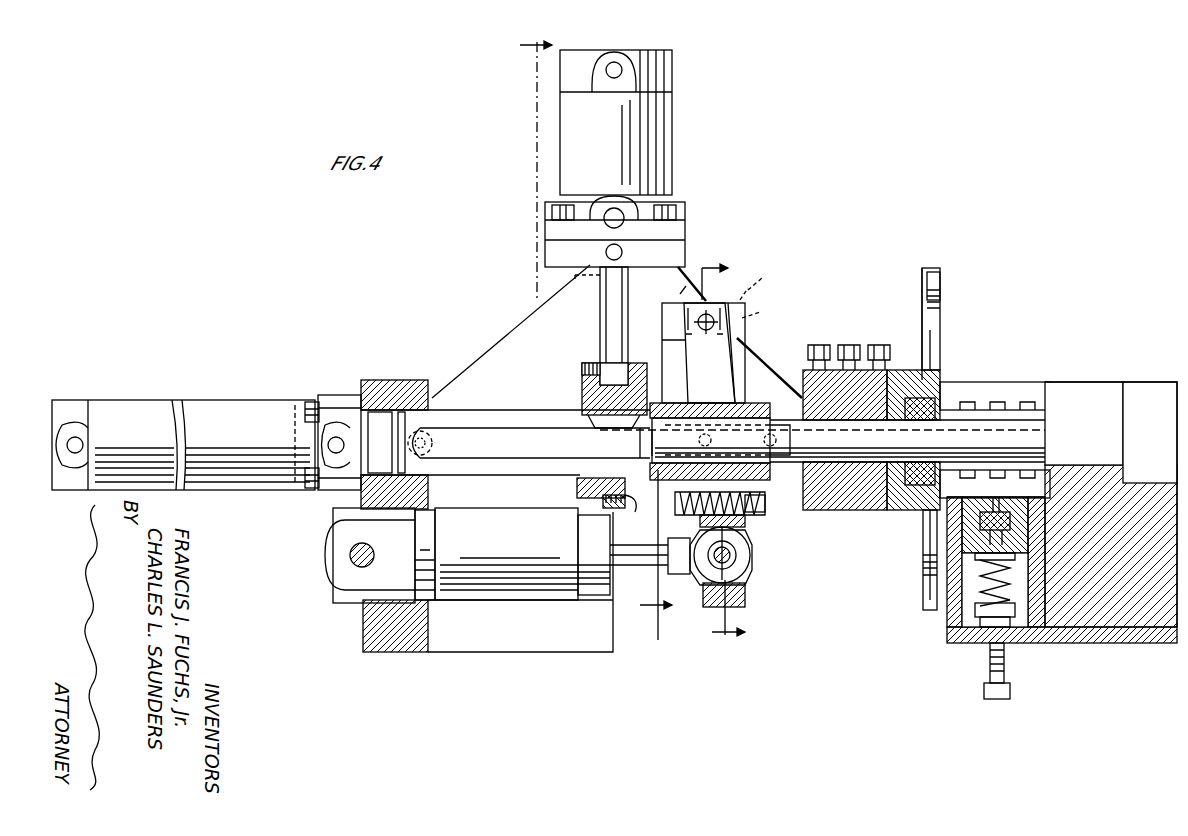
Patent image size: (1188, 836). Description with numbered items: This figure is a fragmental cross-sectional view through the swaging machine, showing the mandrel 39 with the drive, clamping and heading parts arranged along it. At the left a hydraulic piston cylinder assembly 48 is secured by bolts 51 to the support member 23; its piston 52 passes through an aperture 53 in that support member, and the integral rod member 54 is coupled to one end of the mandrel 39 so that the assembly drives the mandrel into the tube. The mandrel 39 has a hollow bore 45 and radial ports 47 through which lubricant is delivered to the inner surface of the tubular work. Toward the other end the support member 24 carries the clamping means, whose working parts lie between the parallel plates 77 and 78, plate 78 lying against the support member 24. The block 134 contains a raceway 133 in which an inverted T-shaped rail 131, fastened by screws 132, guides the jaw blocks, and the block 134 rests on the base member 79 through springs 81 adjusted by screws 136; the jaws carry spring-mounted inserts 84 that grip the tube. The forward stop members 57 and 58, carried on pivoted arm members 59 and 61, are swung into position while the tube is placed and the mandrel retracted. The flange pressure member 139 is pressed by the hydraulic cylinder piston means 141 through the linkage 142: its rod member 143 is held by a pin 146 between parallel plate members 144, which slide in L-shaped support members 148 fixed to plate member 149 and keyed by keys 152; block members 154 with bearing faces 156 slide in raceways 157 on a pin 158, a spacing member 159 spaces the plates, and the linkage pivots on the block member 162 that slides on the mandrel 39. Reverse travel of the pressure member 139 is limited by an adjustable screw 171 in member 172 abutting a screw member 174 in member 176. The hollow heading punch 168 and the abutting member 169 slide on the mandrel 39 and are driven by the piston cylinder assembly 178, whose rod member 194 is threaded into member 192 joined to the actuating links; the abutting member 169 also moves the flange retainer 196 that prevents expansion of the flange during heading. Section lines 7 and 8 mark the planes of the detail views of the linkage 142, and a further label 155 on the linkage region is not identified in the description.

The section line 7- 7 is at (596, 327).
The section line 8- 8 is at (723, 451).
The support member 23 is at (368, 380).
The support member 24 is at (1130, 600).
The mandrel 39 is at (1046, 425).
The hollow bore 45 is at (1002, 390).
The ports or radial outlets 47 is at (1060, 418).
The hydraulic piston cylinder assembly 48 is at (245, 392).
The bolts 51 is at (310, 402).
The piston 52 is at (385, 420).
The aperture 53 is at (430, 478).
The rod member 54 is at (478, 428).
The forward stop member 57 is at (940, 280).
The forward stop member 58 is at (935, 615).
The pivoted arm member 59 is at (922, 268).
The pivoted arm member 61 is at (923, 600).
The plate 77 is at (948, 618).
The plate 78 is at (1048, 650).
The base member 79 is at (965, 635).
The springs 81 is at (1012, 618).
The spring-mounted inserts 84 is at (1030, 385).
The inverted T-shaped rail 131 is at (925, 515).
The screws 132 is at (952, 530).
The raceway 133 is at (1010, 520).
The block 134 is at (1060, 540).
The screws 136 is at (988, 692).
The flange pressure member 139 is at (900, 400).
The hydraulic cylinder piston means 141 is at (472, 598).
The linkage 142 is at (850, 512).
The rod member 143 is at (740, 555).
The parallel plate members 144 is at (725, 380).
The pin 146 is at (610, 258).
The L-shaped support members 148 is at (769, 361).
The plate member 149 is at (510, 283).
The keys 152 is at (908, 555).
The block members 154 is at (746, 284).
The link 155 is at (673, 293).
The bearing faces 156 is at (679, 285).
The raceways 157 is at (748, 316).
The pin 158 is at (779, 280).
The spacing member 159 is at (745, 590).
The block member 162 is at (705, 398).
The heading punch 168 is at (960, 400).
The abutting member 169 is at (845, 345).
The adjustable screw 171 is at (765, 505).
The member 172 is at (745, 522).
The screw member 174 is at (610, 520).
The member 176 is at (577, 488).
The piston cylinder assembly 178 is at (672, 138).
The member 192 is at (590, 366).
The rod member 194 is at (600, 320).
The flange retainer 196 is at (938, 368).